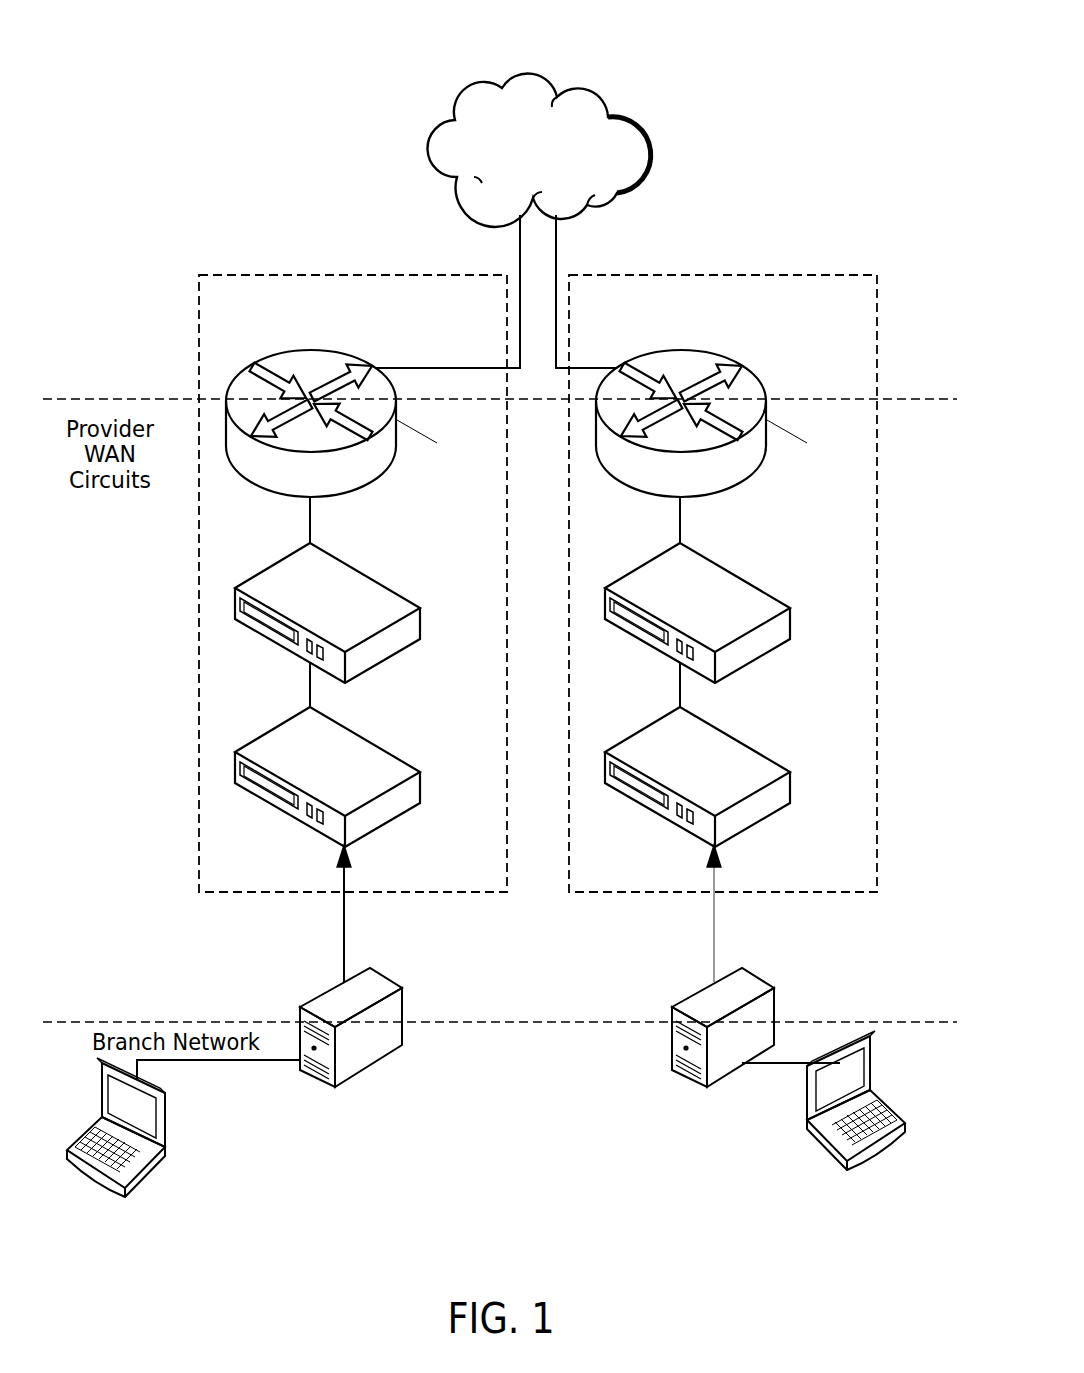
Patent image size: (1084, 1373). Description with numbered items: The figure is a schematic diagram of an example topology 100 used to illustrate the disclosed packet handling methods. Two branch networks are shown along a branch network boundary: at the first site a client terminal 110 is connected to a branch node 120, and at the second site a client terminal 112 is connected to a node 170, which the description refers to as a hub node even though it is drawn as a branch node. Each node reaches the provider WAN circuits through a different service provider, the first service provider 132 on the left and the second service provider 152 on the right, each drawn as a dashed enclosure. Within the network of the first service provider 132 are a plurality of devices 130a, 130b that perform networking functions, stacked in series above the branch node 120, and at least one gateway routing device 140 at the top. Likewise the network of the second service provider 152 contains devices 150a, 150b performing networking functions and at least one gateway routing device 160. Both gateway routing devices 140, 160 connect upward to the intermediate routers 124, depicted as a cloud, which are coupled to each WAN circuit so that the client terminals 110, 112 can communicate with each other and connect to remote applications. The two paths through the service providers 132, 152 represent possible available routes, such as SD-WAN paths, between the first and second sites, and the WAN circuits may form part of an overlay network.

The example topology 100 is at (848, 44).
The client terminal 110 is at (143, 1177).
The client terminal 112 is at (805, 1125).
The branch node 120 is at (303, 1075).
The intermediate routers 124 is at (452, 158).
The device 130a is at (275, 727).
The device 130b is at (365, 572).
The Service Provider 1 132 is at (198, 580).
The gateway routing device 140 is at (257, 483).
The device 150a is at (645, 727).
The device 150b is at (735, 572).
The Service Provider 2 152 is at (878, 583).
The gateway routing device 160 is at (627, 483).
The hub node 170 is at (672, 1072).